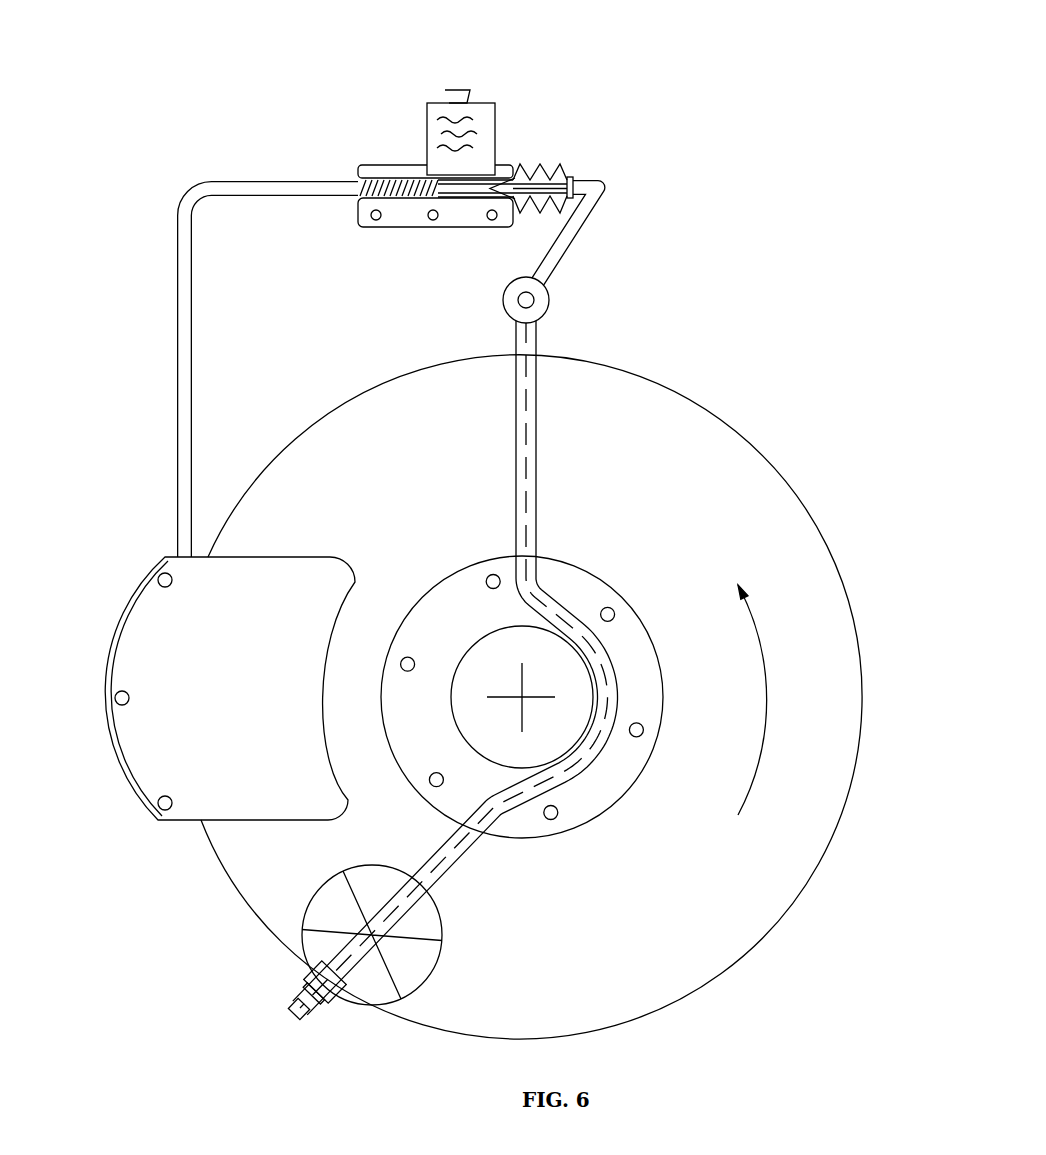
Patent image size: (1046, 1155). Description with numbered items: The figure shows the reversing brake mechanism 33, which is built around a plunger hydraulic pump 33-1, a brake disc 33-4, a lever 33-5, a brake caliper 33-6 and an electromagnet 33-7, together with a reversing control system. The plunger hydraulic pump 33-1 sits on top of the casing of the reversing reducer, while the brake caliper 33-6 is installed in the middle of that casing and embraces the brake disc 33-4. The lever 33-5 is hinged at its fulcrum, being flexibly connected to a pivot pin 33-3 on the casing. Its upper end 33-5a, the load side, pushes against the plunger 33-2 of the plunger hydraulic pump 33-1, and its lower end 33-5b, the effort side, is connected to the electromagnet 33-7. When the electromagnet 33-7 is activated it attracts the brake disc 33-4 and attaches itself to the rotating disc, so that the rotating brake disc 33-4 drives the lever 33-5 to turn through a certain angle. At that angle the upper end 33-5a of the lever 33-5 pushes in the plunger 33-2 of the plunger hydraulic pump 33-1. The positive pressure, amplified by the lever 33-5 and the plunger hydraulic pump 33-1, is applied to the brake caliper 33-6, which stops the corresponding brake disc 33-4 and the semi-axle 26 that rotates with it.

The reversing brake mechanism 33 is at (527, 68).
The plunger hydraulic pump 33-1 is at (463, 214).
The plunger 33-2 is at (490, 187).
The pivot pin 33-3 is at (527, 302).
The brake disc 33-4 is at (727, 468).
The lever 33-5 is at (537, 527).
The upper end of the lever 33-5a is at (752, 172).
The lower end of the lever 33-5b is at (352, 977).
The brake caliper 33-6 is at (257, 793).
The electromagnet 33-7 is at (317, 943).
The semi-axle 26 is at (540, 735).